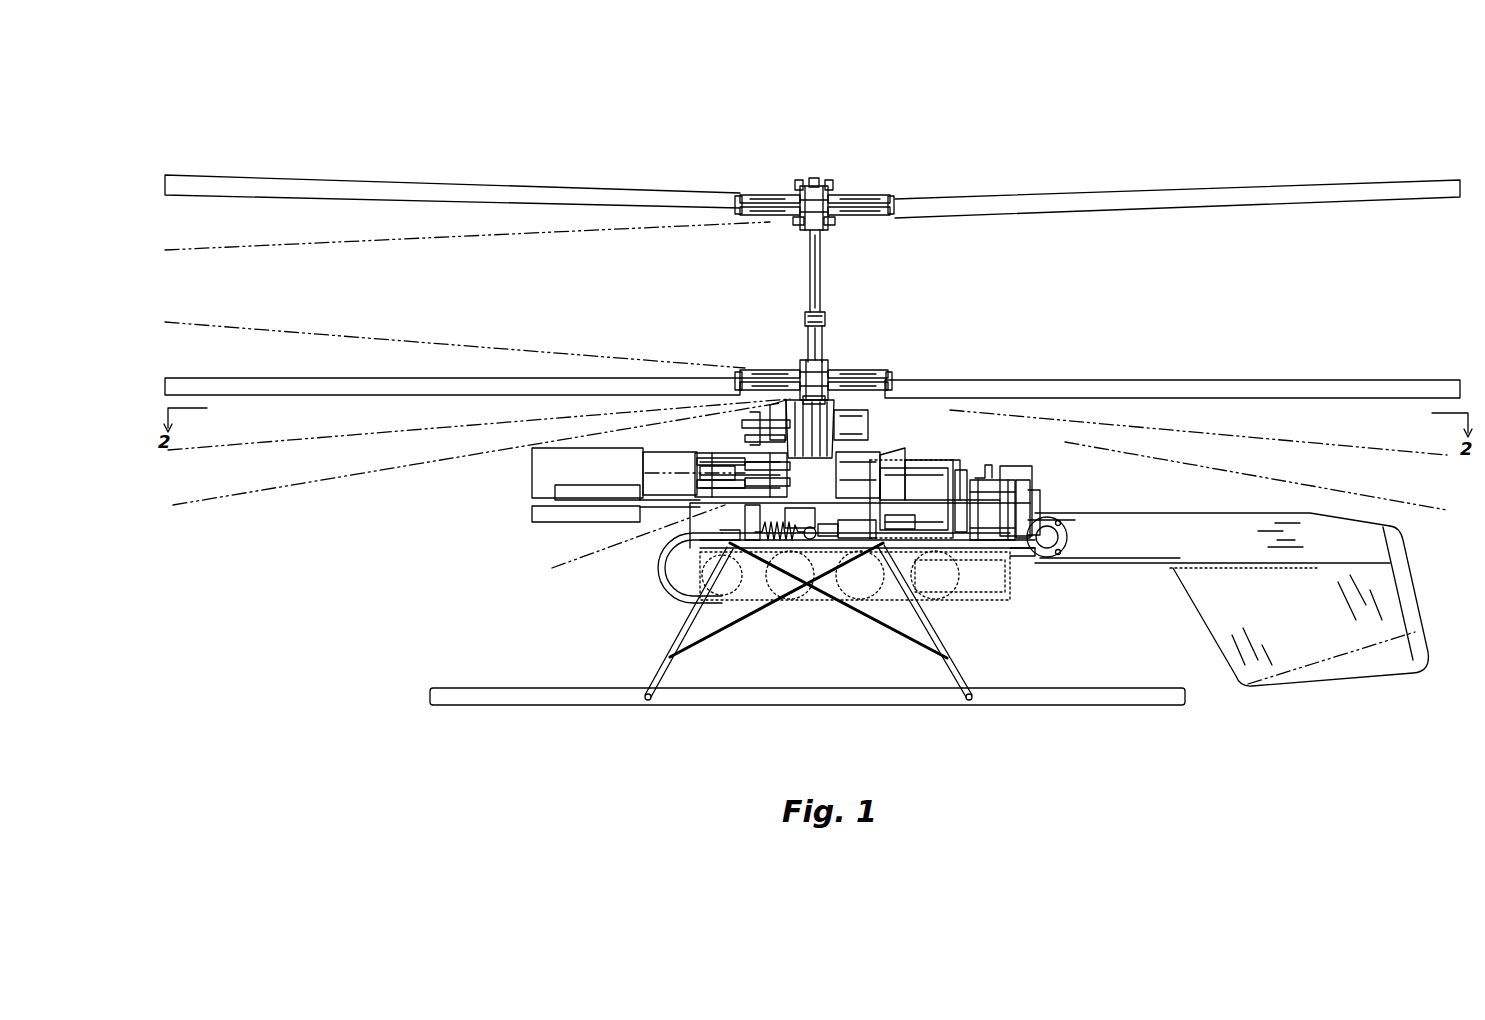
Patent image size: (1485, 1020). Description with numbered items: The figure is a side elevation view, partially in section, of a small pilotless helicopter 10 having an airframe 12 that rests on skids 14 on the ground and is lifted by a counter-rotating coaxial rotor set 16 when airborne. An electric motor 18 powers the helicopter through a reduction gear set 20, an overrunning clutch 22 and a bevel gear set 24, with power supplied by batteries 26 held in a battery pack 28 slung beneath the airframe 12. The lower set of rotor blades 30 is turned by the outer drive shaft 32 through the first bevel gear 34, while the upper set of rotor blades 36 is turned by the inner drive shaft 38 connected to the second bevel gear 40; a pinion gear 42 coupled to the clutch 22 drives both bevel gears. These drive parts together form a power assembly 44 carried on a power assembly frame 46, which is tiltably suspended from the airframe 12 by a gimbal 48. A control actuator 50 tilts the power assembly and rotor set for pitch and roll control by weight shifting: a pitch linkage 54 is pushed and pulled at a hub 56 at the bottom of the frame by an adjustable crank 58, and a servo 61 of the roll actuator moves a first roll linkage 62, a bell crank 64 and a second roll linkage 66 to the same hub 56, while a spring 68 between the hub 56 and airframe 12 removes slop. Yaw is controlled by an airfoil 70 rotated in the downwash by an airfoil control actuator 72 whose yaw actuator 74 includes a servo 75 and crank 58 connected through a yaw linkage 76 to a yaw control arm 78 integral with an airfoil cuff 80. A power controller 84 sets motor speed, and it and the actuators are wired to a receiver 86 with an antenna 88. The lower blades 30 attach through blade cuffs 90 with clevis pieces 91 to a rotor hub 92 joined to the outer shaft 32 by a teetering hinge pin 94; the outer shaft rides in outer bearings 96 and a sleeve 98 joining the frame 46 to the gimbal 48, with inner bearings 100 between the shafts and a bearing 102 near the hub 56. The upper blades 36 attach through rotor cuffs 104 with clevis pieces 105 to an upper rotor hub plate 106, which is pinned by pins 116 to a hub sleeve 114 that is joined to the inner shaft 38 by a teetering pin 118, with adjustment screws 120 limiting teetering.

The pilotless helicopter 10 is at (376, 552).
The airframe 12 is at (880, 434).
The skids 14 is at (796, 688).
The coaxial rotor set 16 is at (933, 268).
The electric motor 18 is at (532, 470).
The reduction gear set 20 is at (652, 440).
The overrunning clutch 22 is at (692, 460).
The bevel gear set 24 is at (730, 462).
The batteries 26 is at (955, 588).
The battery pack 28 is at (668, 595).
The first set of rotor blades 30 is at (298, 378).
The first drive shaft 32 is at (823, 340).
The first bevel gear 34 is at (912, 462).
The second set of rotor blades 36 is at (382, 178).
The second drive shaft 38 is at (821, 268).
The second bevel gear 40 is at (876, 472).
The pinion gear 42 is at (754, 519).
The power assembly 44 is at (690, 506).
The power assembly frame 46 is at (840, 440).
The gimbal 48 is at (776, 420).
The control actuator 50 is at (962, 470).
The pitch linkage 54 is at (848, 548).
The hub 56 is at (797, 550).
The crank 58 is at (1026, 492).
The servo 61 is at (922, 508).
The first roll linkage 62 is at (955, 456).
The bell crank 64 is at (828, 548).
The second roll linkage 66 is at (812, 550).
The spring 68 is at (735, 535).
The airfoil 70 is at (1292, 611).
The airfoil control actuator 72 is at (1023, 471).
The yaw actuator 74 is at (1060, 538).
The servo 75 is at (990, 520).
The bracket 76 is at (1040, 512).
The yaw control arm 78 is at (1040, 556).
The airfoil cuff 80 is at (1062, 525).
The power controller 84 is at (545, 522).
The receiver 86 is at (988, 468).
The antenna 88 is at (1085, 565).
The blade cuffs 90 is at (756, 371).
The clevis pieces 91 is at (740, 384).
The rotor hub 92 is at (830, 368).
The teetering hinge pin 94 is at (802, 366).
The outer bearings 96 is at (805, 430).
The sleeve 98 is at (745, 432).
The inner bearings 100 is at (825, 316).
The bearing 102 is at (775, 548).
The rotor cuffs 104 is at (762, 195).
The clevis pieces 105 is at (740, 213).
The upper rotor hub plate 106 is at (830, 196).
The hub sleeve 114 is at (829, 182).
The pins 116 is at (798, 182).
The teetering pin 118 is at (813, 178).
The adjustment screws 120 is at (798, 226).